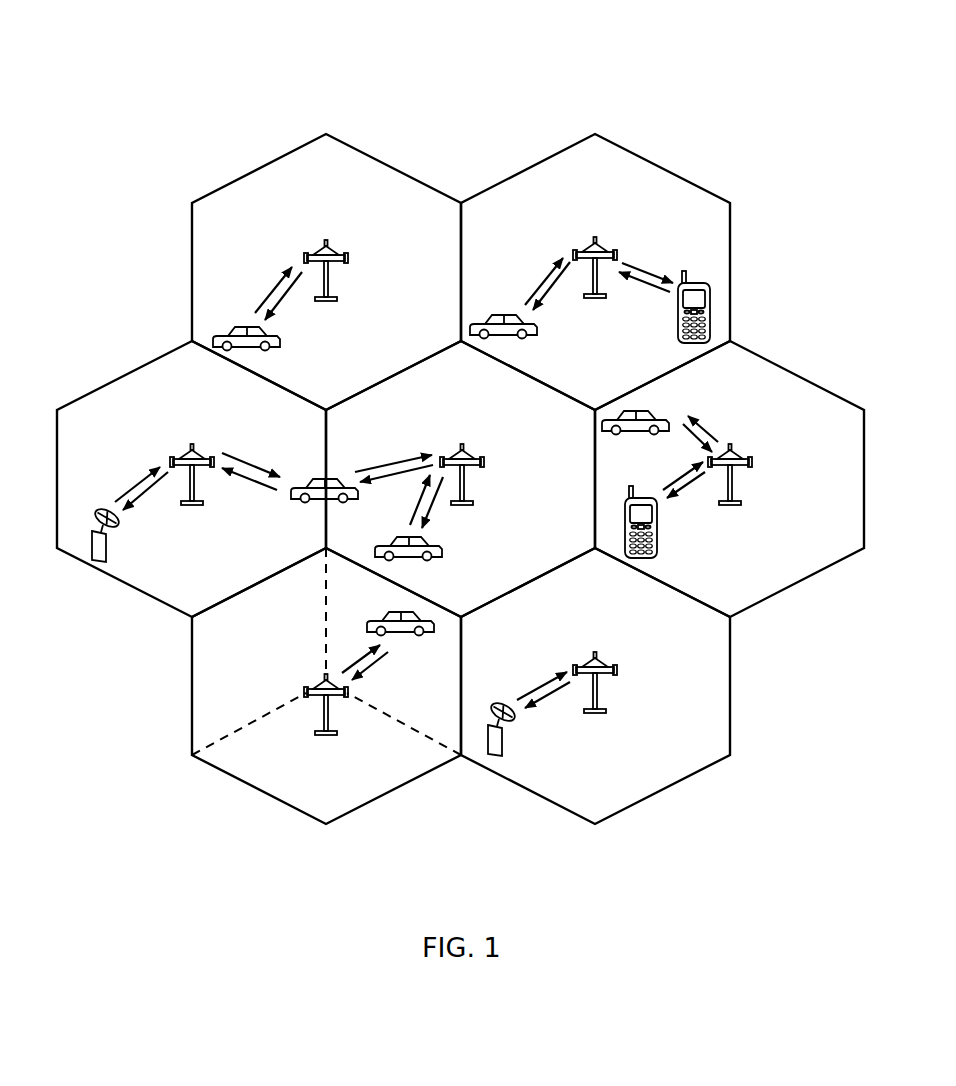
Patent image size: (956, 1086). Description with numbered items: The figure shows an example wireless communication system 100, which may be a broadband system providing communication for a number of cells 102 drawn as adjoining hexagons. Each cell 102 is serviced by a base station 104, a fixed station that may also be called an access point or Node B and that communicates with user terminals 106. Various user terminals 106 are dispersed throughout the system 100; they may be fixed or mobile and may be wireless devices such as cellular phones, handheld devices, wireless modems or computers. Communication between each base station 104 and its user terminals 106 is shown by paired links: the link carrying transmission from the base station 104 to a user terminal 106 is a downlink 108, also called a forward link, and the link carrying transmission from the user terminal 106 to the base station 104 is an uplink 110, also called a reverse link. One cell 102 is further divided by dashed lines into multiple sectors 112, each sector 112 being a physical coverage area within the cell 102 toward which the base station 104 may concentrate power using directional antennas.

The wireless communication system 100 is at (514, 56).
The cell 102 is at (266, 163).
The base station 104 is at (327, 240).
The user terminal 106 is at (284, 345).
The downlink 108 is at (288, 305).
The uplink 110 is at (272, 290).
The sector 112 is at (374, 788).